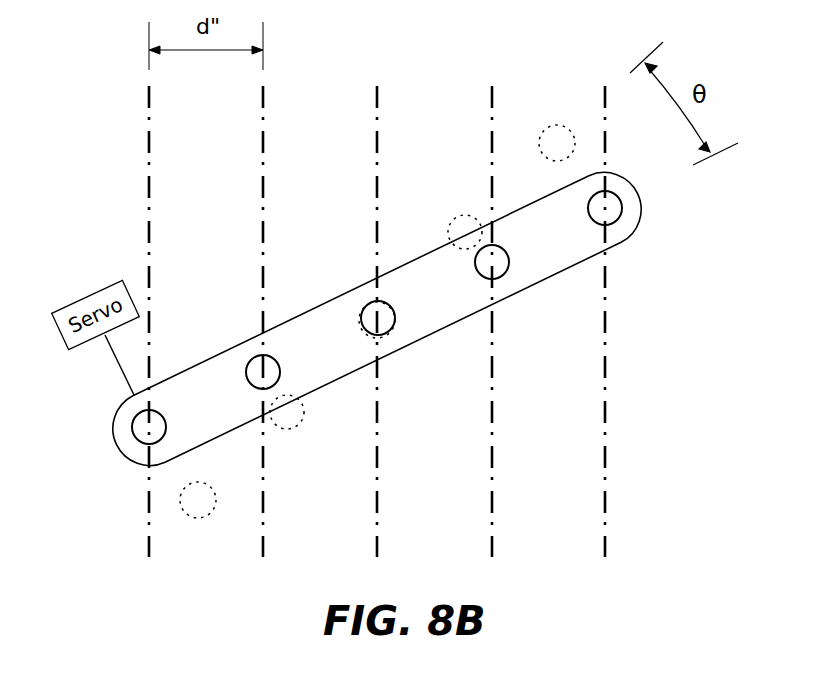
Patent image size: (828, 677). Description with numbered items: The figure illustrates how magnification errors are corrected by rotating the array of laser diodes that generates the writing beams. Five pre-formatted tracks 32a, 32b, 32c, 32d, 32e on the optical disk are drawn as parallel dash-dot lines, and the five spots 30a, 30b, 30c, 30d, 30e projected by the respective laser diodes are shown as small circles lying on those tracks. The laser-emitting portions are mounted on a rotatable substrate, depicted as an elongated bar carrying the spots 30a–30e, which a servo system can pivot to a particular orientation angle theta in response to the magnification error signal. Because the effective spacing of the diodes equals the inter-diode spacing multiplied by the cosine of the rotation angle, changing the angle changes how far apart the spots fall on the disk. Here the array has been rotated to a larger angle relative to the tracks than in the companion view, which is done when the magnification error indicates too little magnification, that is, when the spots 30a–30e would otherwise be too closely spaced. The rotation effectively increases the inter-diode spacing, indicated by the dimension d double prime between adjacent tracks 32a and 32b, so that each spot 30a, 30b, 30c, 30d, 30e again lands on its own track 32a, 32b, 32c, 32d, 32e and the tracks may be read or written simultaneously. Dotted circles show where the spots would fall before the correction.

The spot 30a is at (138, 442).
The spot 30b is at (245, 370).
The spot 30c is at (362, 306).
The spot 30d is at (483, 283).
The spot 30e is at (598, 223).
The pre-formatted track 32a is at (147, 97).
The pre-formatted track 32b is at (265, 97).
The pre-formatted track 32c is at (380, 87).
The pre-formatted track 32d is at (493, 87).
The pre-formatted track 32e is at (606, 347).